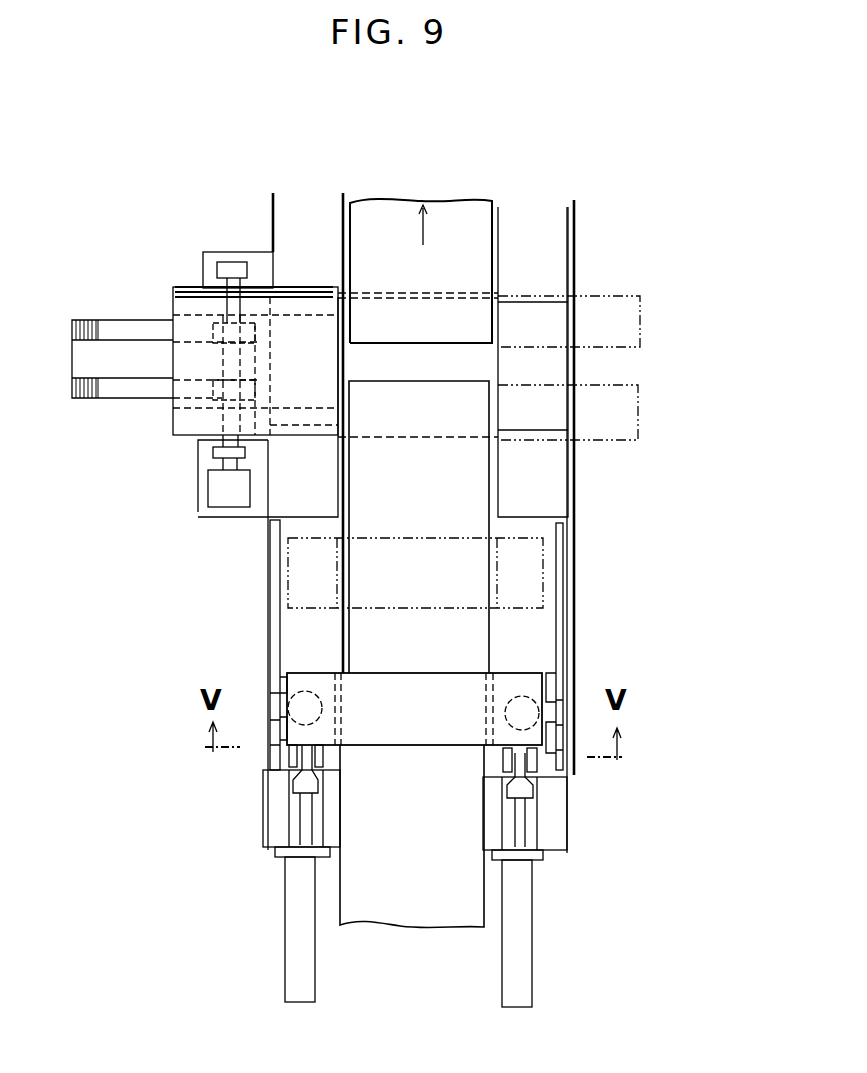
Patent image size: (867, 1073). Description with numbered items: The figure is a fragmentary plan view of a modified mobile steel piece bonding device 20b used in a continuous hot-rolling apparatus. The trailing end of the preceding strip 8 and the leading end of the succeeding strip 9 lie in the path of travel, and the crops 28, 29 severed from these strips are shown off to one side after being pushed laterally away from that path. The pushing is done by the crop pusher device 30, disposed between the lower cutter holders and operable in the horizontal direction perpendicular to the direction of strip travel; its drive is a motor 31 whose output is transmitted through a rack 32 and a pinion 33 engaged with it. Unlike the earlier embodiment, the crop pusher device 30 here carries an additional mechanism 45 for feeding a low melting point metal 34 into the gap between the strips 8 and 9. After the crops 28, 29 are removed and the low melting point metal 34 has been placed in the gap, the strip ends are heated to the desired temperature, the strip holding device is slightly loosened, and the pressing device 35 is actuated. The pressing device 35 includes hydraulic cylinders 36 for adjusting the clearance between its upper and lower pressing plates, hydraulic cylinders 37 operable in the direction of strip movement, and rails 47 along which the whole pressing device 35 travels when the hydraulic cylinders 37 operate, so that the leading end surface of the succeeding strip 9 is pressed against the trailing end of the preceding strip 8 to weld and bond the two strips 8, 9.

The preceding strip 8 is at (468, 225).
The succeeding strip 9 is at (450, 900).
The bonding device 20b is at (586, 290).
The crop 28 is at (638, 400).
The crop 29 is at (640, 306).
The crop pusher device 30 is at (173, 425).
The motor 31 is at (207, 488).
The rack 32 is at (133, 320).
The pinion 33 is at (222, 338).
The low melting point metal 34 is at (200, 283).
The pressing device 35 is at (405, 700).
The hydraulic cylinders 36 is at (305, 690).
The hydraulic cylinders 37 is at (285, 935).
The mechanism for feeding low melting point metal 45 is at (186, 290).
The rails 47 is at (270, 632).